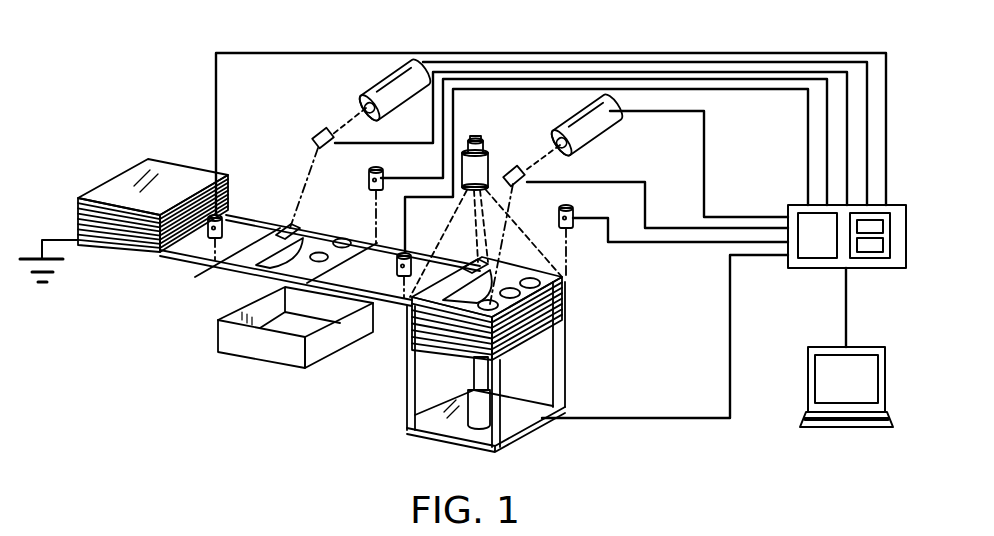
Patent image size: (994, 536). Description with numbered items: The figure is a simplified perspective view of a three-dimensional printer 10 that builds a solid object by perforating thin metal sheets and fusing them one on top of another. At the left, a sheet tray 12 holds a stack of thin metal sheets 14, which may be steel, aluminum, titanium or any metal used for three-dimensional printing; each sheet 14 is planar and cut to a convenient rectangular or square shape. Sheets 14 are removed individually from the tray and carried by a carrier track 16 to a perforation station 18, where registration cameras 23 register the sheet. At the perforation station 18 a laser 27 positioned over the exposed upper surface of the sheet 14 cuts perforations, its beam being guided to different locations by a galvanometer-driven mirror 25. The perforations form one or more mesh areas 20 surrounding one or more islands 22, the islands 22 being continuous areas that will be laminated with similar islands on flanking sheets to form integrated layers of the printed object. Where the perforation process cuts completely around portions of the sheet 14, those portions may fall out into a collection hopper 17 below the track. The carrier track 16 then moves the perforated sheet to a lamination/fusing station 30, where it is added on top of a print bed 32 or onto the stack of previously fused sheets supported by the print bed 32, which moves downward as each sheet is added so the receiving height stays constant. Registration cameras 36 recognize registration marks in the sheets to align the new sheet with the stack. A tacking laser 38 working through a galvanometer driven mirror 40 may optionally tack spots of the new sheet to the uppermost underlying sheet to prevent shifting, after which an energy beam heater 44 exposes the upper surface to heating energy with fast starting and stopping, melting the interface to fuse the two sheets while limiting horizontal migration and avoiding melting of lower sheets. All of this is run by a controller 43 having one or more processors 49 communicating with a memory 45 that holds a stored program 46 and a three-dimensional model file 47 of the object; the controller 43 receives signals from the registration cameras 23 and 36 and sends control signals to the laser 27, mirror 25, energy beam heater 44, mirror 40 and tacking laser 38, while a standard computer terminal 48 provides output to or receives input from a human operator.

The 3D printer 10 is at (125, 63).
The sheet tray 12 is at (64, 209).
The sheet 14 is at (130, 232).
The carrier track 16 is at (163, 256).
The collection hopper 17 is at (252, 345).
The perforation station 18 is at (286, 121).
The mesh area 20 is at (310, 268).
The island 22 is at (300, 228).
The registration camera 23 is at (223, 220).
The galvanometer-driven mirror 25 is at (319, 129).
The laser 27 is at (378, 84).
The lamination/fusing station 30 is at (596, 236).
The print bed 32 is at (532, 345).
The registration camera 36 is at (566, 203).
The tacking laser 38 is at (613, 124).
The galvanometer driven mirror 40 is at (514, 167).
The controller 43 is at (815, 269).
The energy beam heater 44 is at (493, 152).
The memory 45 is at (870, 259).
The stored program 46 is at (883, 246).
The 3D model file 47 is at (886, 224).
The computer terminal 48 is at (808, 380).
The processor 49 is at (835, 251).